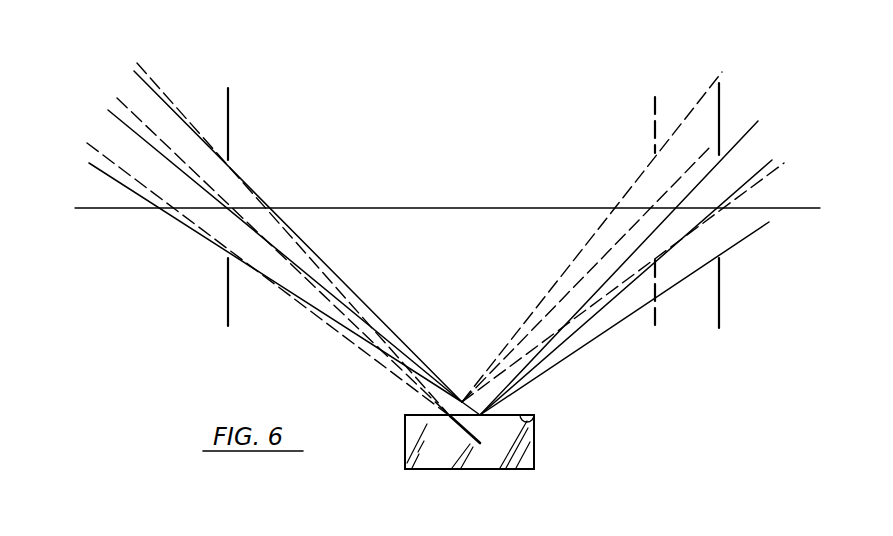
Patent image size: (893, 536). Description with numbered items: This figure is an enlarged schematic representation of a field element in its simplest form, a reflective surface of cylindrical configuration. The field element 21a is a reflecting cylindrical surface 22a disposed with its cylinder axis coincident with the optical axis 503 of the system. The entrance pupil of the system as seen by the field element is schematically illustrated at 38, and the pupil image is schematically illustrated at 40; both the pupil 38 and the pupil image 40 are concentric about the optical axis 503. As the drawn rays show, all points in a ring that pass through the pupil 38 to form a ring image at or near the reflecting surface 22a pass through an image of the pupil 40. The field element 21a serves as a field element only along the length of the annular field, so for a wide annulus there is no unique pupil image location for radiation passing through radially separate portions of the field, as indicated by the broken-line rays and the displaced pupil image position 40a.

The optical axis 503 is at (432, 208).
The entrance pupil 38 is at (227, 288).
The pupil image 40 is at (723, 290).
The alternate slit aperture position 40a is at (655, 128).
The field element 21a is at (522, 450).
The reflecting cylindrical surface 22a is at (535, 418).